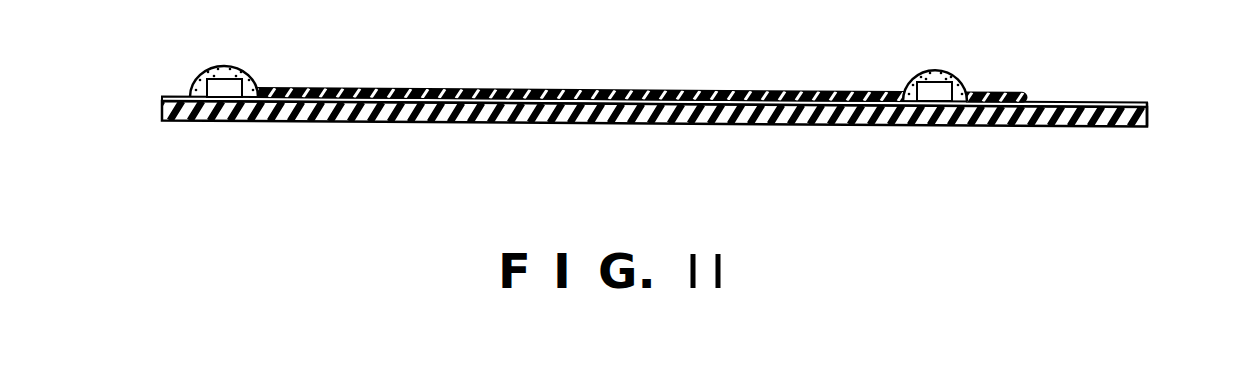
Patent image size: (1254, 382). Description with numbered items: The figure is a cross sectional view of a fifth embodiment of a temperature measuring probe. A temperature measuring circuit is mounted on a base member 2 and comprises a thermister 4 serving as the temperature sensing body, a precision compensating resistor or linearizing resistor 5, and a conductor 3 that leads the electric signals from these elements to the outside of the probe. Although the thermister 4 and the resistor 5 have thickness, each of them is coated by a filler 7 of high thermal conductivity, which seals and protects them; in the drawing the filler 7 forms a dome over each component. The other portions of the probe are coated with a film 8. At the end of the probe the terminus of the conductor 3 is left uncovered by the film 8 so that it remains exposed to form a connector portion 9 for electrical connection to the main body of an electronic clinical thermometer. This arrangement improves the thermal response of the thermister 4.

The base member 2 is at (560, 123).
The conductor 3 is at (555, 89).
The thermister 4 is at (222, 68).
The precision compensating resistor or linearizing resistor 5 is at (921, 73).
The filler 7 is at (244, 78).
The film 8 is at (180, 97).
The connector portion 9 is at (1148, 117).